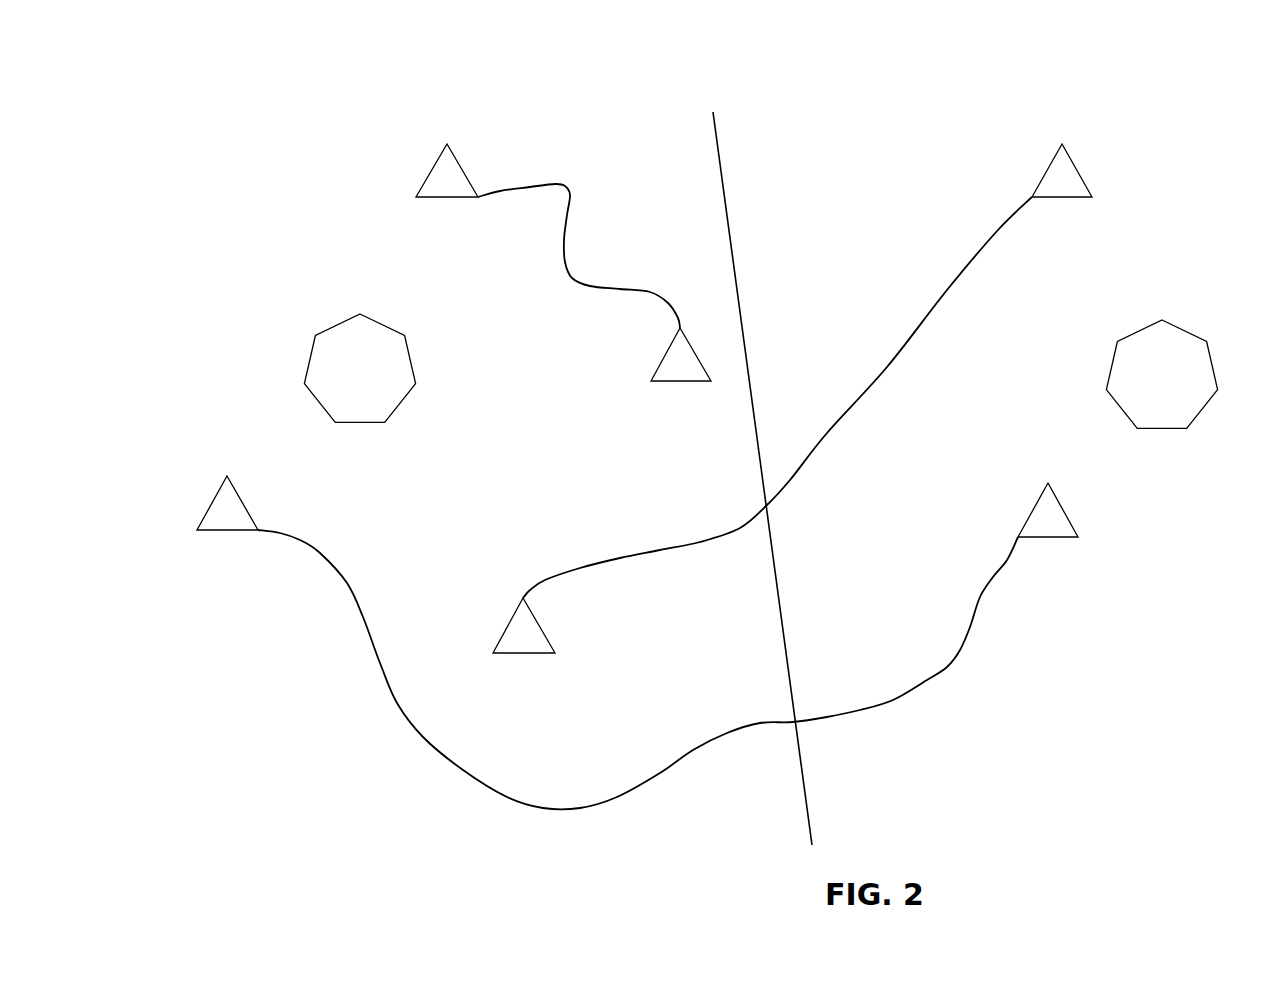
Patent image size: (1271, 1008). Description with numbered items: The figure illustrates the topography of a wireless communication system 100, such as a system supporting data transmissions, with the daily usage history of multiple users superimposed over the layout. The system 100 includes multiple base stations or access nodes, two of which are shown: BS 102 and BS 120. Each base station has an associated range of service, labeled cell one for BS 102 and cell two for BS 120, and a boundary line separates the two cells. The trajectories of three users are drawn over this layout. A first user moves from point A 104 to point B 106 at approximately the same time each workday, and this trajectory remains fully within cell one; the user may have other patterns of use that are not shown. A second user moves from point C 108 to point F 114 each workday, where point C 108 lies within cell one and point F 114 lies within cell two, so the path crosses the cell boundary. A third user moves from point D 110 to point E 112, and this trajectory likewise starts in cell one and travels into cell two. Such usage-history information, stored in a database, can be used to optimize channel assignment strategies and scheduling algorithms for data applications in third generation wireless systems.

The system 100 is at (207, 72).
The base station 102 is at (338, 391).
The point A 104 is at (432, 172).
The point B 106 is at (665, 357).
The point C 108 is at (212, 500).
The point D 110 is at (507, 628).
The point E 112 is at (1042, 173).
The point F 114 is at (1033, 510).
The base station 120 is at (1140, 399).